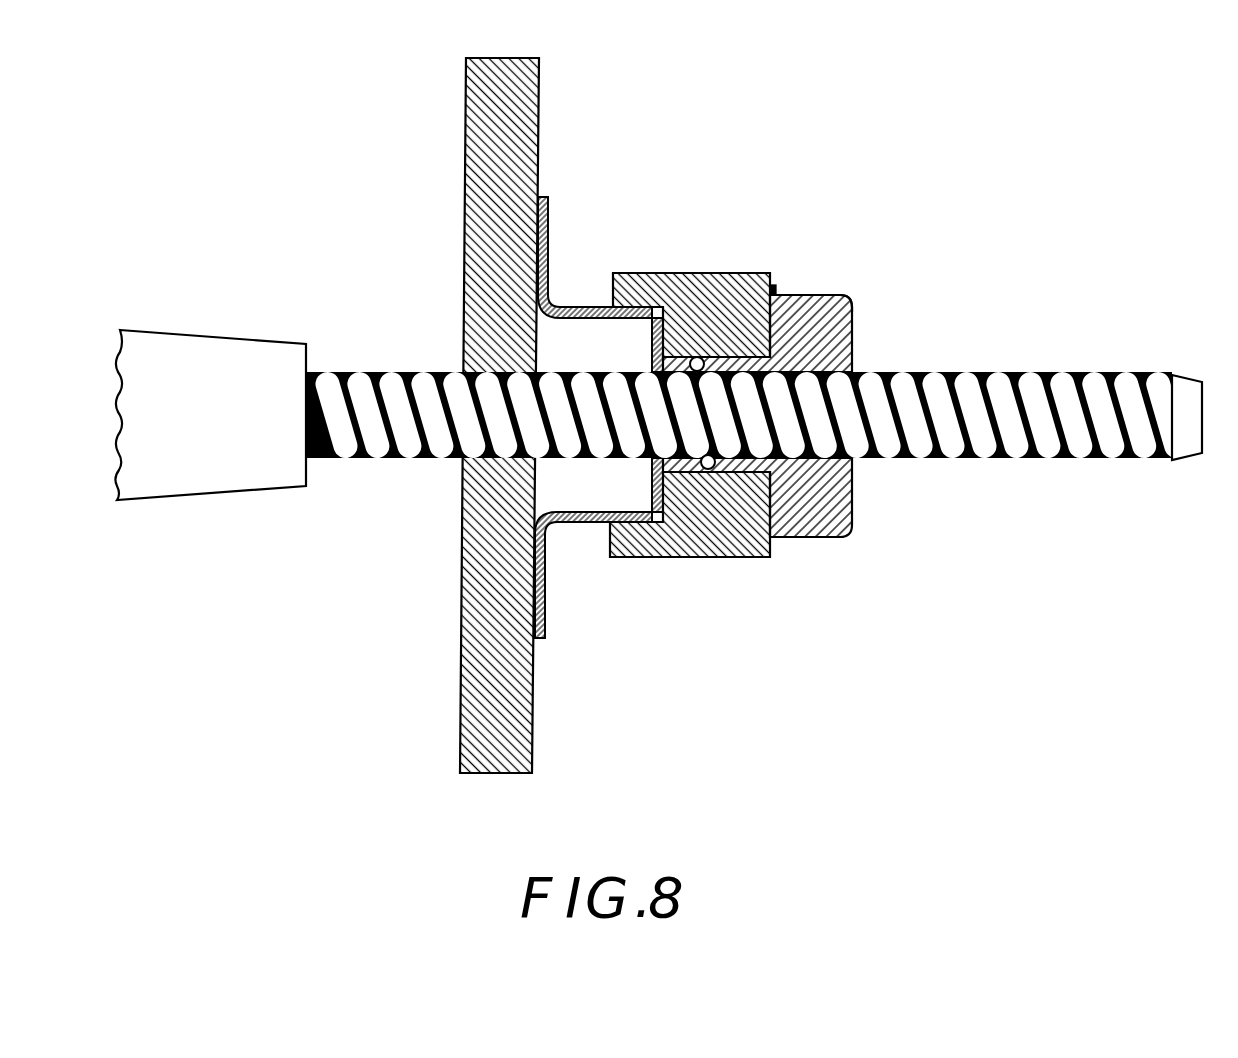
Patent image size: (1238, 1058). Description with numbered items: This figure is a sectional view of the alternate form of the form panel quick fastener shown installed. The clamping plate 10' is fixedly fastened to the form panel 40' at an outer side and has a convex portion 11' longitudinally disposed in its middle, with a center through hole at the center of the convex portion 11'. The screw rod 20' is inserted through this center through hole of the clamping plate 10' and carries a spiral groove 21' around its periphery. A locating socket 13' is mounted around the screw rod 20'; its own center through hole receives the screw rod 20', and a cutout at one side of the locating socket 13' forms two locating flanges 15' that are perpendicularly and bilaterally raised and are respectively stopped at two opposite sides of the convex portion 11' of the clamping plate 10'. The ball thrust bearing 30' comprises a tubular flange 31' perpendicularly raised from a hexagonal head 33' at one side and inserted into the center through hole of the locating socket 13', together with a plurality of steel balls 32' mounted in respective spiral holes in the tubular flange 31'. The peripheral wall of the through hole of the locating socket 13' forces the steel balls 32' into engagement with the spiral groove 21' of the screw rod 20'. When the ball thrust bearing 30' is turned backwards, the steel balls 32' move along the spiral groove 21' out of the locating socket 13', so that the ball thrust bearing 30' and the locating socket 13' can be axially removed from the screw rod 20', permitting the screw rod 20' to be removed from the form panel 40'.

The form panel 40' is at (555, 414).
The convex portion 11' is at (600, 264).
The locating socket 13' is at (691, 255).
The steel balls 32' is at (750, 309).
The tubular flange 31' is at (803, 248).
The ball thrust bearing 30' is at (774, 362).
The hexagonal head 33' is at (876, 275).
The spiral groove 21' is at (876, 496).
The screw rod 20' is at (658, 475).
The clamping plate 10' is at (599, 575).
The locating flanges 15' is at (690, 584).